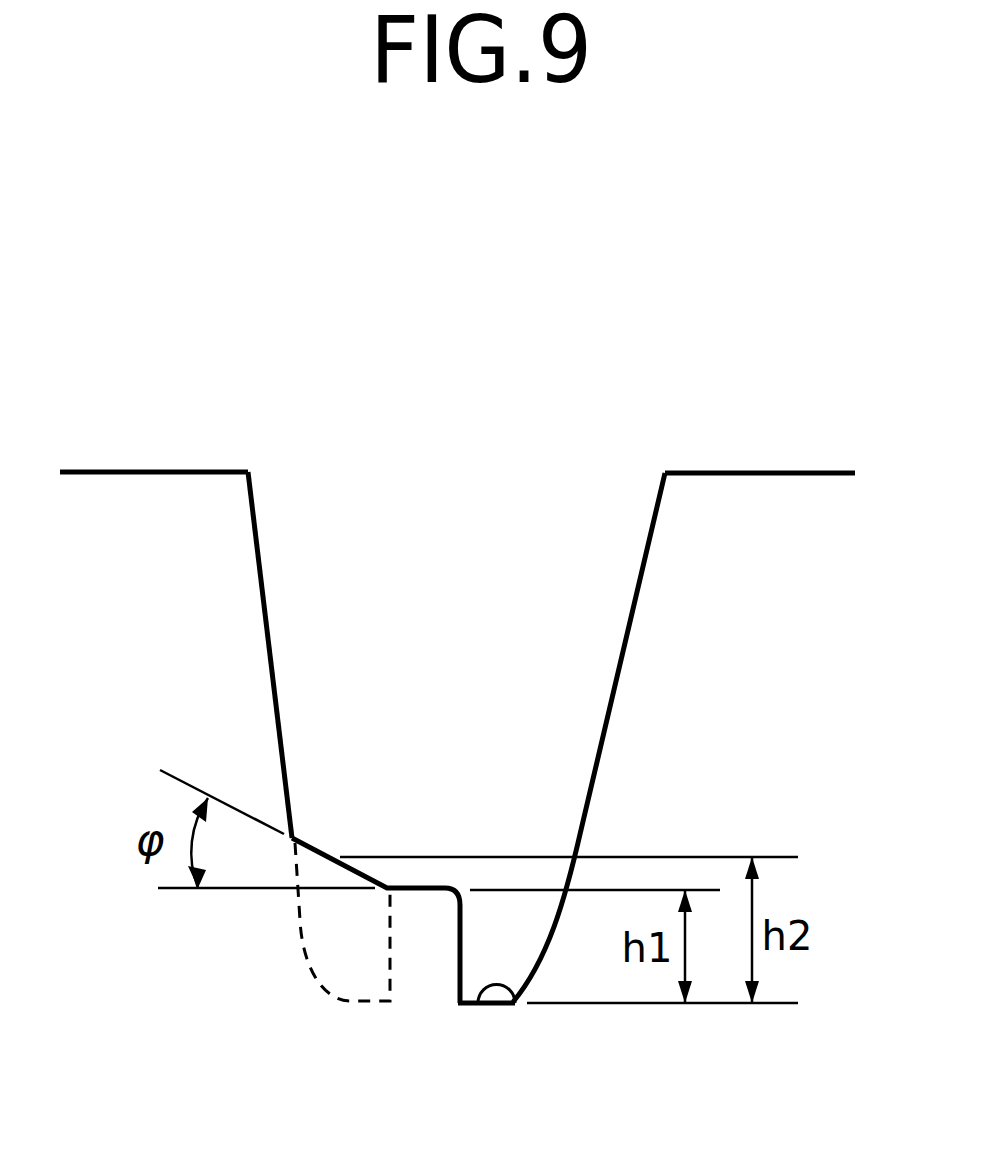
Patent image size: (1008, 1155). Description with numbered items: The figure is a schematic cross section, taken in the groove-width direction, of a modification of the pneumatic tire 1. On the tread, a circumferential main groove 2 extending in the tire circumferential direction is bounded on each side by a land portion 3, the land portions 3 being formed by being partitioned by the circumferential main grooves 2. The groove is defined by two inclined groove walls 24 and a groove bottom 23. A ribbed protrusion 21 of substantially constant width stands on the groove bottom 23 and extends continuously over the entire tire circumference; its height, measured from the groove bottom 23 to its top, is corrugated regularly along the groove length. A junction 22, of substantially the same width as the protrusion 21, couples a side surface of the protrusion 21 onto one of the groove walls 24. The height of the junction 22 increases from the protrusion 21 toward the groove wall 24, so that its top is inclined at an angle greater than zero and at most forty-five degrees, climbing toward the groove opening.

The pneumatic tire 1 is at (813, 271).
The circumferential main groove 2 is at (455, 500).
The land portion 3 is at (133, 470).
The protrusion 21 is at (420, 983).
The junction 22 is at (340, 970).
The groove bottom 23 is at (515, 1000).
The groove wall 24 is at (265, 597).